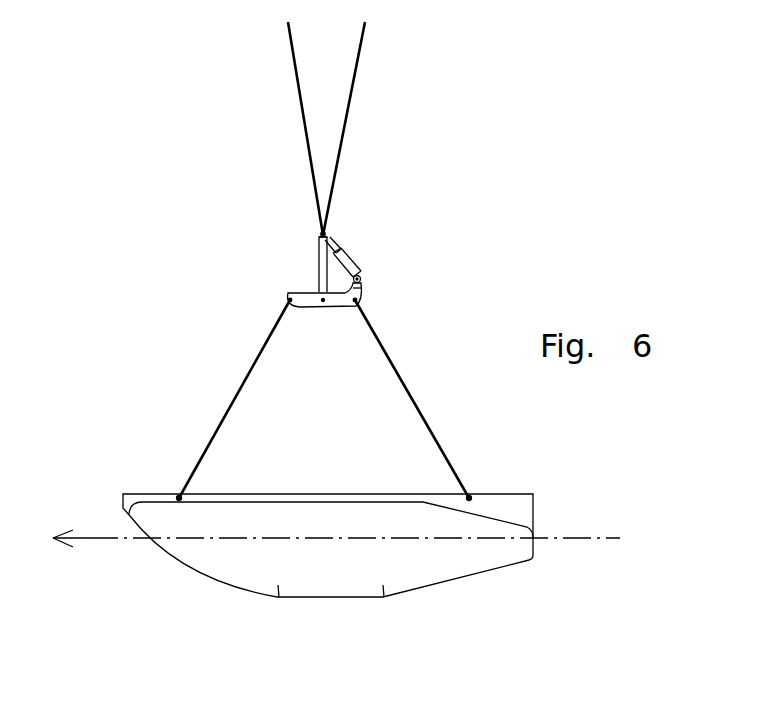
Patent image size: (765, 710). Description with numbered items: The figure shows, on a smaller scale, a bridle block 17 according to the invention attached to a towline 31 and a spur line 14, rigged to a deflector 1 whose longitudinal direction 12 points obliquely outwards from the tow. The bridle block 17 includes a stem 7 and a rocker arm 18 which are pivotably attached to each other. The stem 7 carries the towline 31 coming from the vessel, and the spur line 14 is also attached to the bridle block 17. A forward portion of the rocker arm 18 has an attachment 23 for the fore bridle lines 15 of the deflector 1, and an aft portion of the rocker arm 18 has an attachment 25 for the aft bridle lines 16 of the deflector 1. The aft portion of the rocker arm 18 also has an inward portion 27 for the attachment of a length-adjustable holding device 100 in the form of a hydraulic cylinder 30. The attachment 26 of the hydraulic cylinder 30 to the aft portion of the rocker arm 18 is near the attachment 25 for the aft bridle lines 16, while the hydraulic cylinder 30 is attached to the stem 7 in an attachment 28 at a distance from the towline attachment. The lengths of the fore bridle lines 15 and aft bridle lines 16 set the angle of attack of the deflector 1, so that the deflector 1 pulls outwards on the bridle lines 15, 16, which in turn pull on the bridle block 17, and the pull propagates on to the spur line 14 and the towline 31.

The deflector 1 is at (215, 522).
The stem 7 is at (320, 267).
The longitudinal direction 12 is at (547, 538).
The spur line 14 is at (348, 123).
The fore bridle lines 15 is at (218, 427).
The aft bridle lines 16 is at (437, 433).
The bridle block 17 is at (279, 249).
The rocker arm 18 is at (320, 292).
The attachment for fore bridle lines 23 is at (290, 300).
The attachment for aft bridle lines 25 is at (355, 301).
The attachment of the hydraulic cylinder 26 is at (361, 278).
The inward portion 27 is at (359, 290).
The attachment 28 is at (328, 236).
The hydraulic cylinder 30 is at (350, 263).
The towline 31 is at (302, 117).
The holding device 100 is at (353, 249).